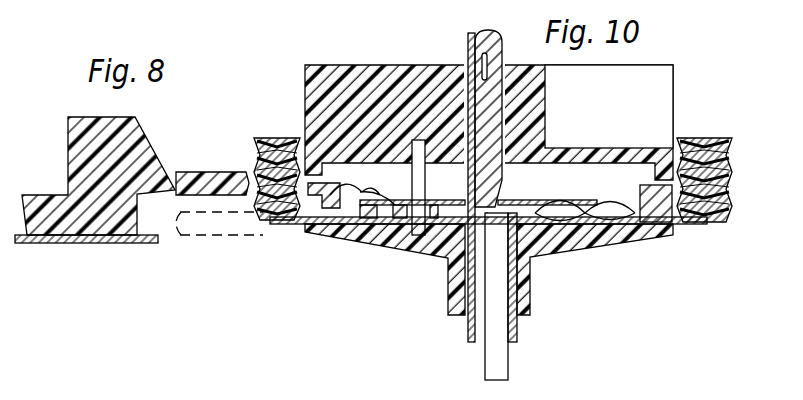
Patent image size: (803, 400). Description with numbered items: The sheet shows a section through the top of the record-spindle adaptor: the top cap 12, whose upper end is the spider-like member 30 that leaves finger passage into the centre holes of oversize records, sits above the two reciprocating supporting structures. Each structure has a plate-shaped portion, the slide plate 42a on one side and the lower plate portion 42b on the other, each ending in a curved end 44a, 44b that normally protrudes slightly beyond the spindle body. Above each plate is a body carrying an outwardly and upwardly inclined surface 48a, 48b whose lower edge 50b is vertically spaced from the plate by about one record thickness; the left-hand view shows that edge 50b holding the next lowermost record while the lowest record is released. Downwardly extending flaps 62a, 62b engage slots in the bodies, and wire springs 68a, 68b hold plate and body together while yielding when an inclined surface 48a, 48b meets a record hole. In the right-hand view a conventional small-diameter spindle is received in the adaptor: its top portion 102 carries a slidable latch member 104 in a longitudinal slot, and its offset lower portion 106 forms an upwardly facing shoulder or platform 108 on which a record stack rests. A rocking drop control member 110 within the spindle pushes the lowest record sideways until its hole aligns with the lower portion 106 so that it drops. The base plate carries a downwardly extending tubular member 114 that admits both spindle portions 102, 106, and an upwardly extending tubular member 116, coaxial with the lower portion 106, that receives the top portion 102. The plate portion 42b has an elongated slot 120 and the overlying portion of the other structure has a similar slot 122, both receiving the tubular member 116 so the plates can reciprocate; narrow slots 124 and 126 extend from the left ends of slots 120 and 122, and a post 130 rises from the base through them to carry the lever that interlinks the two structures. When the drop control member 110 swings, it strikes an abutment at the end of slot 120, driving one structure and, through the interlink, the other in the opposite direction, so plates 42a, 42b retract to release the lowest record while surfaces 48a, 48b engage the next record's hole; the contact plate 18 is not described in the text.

In FIG. 10, the top cap 12 is at (304, 100).
In FIG. 10, the contact plate 18 is at (504, 213).
In FIG. 10, the spider-like member 30 is at (392, 65).
In FIG. 10, the slide plate 42a is at (662, 225).
In FIG. 10, the lower plate portion 42b is at (330, 223).
In FIG. 8, the curved end 44a is at (158, 240).
In FIG. 10, the curved end 44a is at (712, 226).
In FIG. 10, the curved end 44b is at (270, 225).
In FIG. 10, the inclined surface 48a is at (300, 202).
In FIG. 8, the inclined surface 48b is at (157, 153).
In FIG. 10, the inclined surface 48b is at (682, 183).
In FIG. 8, the lower edge 50b is at (183, 203).
In FIG. 10, the downwardly extending flap 62a is at (360, 218).
In FIG. 10, the downwardly extending flap 62b is at (640, 227).
In FIG. 10, the wire spring 68a is at (362, 196).
In FIG. 10, the wire spring 68b is at (613, 202).
In FIG. 10, the top portion of centre spindle 102 is at (500, 153).
In FIG. 10, the slidable latch member 104 is at (503, 130).
In FIG. 10, the lower portion of spindle 106 is at (502, 362).
In FIG. 10, the shoulder or platform 108 is at (493, 228).
In FIG. 10, the drop control member 110 is at (448, 270).
In FIG. 10, the tubular member 114 is at (517, 332).
In FIG. 10, the upwardly extending tubular member 116 is at (504, 177).
In FIG. 10, the elongated slot 120 is at (428, 238).
In FIG. 10, the elongated slot 122 is at (443, 203).
In FIG. 10, the narrow slot 124 is at (392, 222).
In FIG. 10, the narrow slot 126 is at (362, 184).
In FIG. 10, the post 130 is at (410, 250).